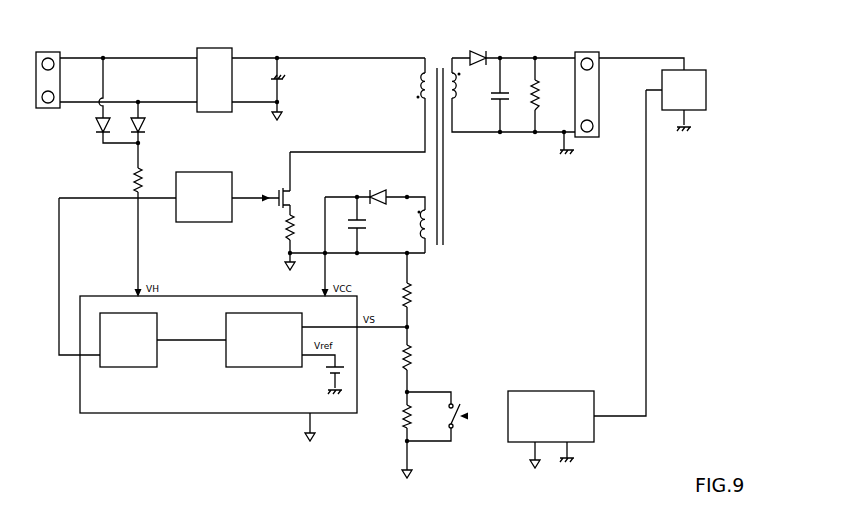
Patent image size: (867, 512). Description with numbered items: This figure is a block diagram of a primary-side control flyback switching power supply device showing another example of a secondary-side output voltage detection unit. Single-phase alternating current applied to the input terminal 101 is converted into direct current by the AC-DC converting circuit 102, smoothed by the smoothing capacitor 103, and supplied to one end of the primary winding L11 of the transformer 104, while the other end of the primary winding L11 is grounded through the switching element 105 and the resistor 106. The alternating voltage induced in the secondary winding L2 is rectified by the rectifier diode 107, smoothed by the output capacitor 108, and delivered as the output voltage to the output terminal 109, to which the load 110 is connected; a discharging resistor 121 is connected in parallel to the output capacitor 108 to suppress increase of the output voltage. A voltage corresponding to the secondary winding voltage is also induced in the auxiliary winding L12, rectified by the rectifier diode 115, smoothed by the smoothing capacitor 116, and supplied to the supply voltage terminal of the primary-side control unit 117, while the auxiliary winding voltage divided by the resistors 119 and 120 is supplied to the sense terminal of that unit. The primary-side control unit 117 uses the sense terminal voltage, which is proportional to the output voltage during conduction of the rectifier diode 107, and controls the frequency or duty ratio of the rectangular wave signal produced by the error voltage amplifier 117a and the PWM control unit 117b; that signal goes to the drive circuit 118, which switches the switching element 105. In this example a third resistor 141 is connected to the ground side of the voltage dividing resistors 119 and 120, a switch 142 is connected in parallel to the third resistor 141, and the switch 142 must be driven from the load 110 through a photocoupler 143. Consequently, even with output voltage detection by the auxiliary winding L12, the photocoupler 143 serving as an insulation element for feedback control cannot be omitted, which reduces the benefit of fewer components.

The input terminal 101 is at (42, 50).
The AC-DC converting circuit 102 is at (207, 47).
The smoothing capacitor 103 is at (284, 76).
The transformer 104 is at (441, 69).
The switching element 105 is at (279, 188).
The resistor 106 is at (285, 229).
The rectifier diode 107 is at (477, 50).
The output capacitor 108 is at (503, 92).
The output terminal 109 is at (588, 50).
The load 110 is at (693, 68).
The rectifier diode 115 is at (381, 189).
The smoothing capacitor 116 is at (365, 233).
The primary-side control unit 117 is at (105, 295).
The error voltage amplifier 117a is at (274, 368).
The PWM control unit 117b is at (158, 361).
The drive circuit 118 is at (213, 170).
The resistor 119 is at (418, 292).
The resistor 120 is at (417, 354).
The discharging resistor 121 is at (540, 95).
The third resistor 141 is at (400, 416).
The switch 142 is at (458, 421).
The photocoupler 143 is at (568, 390).
The primary winding L11 is at (420, 88).
The auxiliary winding L12 is at (432, 218).
The secondary winding L2 is at (457, 98).